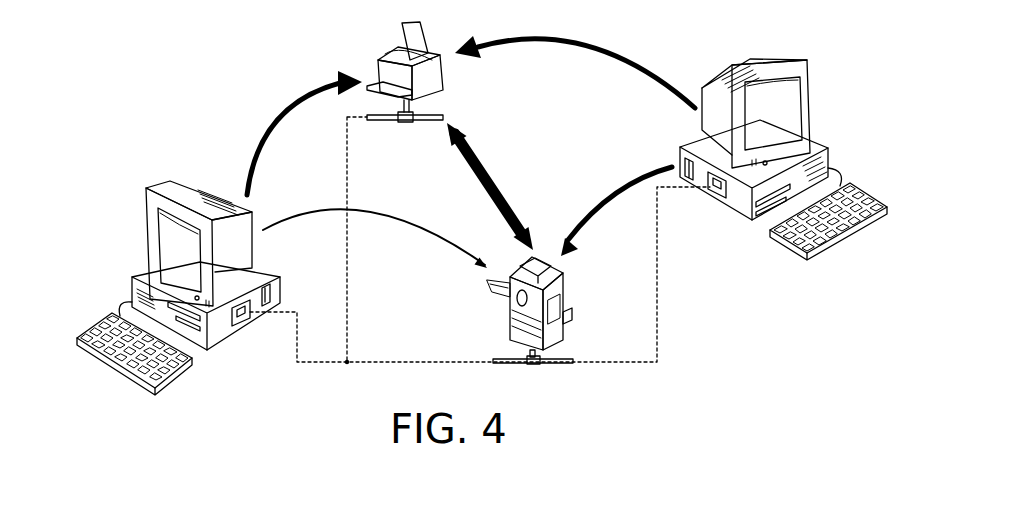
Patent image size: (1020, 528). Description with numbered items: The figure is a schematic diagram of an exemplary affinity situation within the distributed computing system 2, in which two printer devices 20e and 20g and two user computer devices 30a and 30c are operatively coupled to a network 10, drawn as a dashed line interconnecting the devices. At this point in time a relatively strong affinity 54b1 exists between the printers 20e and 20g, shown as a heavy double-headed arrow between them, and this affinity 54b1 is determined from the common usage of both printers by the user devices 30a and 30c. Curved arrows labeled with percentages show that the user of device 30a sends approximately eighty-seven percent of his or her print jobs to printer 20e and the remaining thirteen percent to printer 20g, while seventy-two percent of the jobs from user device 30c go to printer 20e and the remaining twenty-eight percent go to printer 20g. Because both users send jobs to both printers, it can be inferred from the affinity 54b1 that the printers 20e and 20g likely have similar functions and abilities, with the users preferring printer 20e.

The distributed computing environment or system 2 is at (130, 70).
The network 10 is at (297, 362).
The printer device 20e is at (444, 73).
The printer device 20g is at (563, 337).
The user computer device 30a is at (130, 277).
The user computer device 30c is at (828, 148).
The affinity 54b1 is at (505, 184).